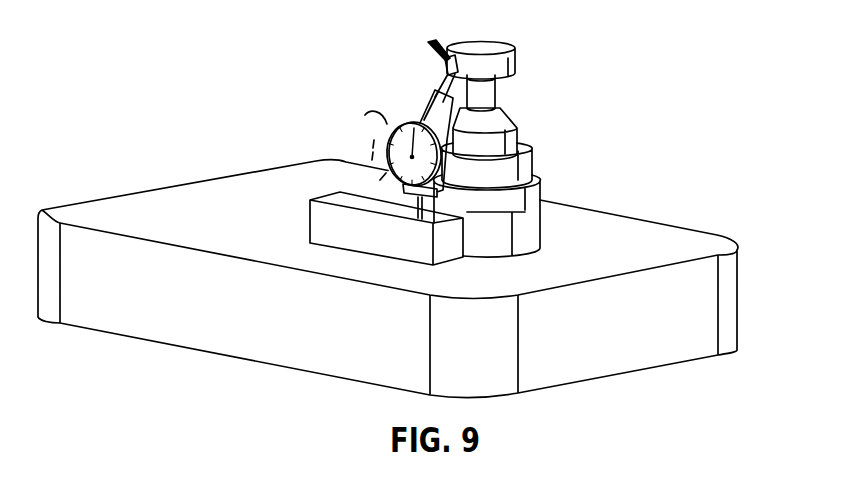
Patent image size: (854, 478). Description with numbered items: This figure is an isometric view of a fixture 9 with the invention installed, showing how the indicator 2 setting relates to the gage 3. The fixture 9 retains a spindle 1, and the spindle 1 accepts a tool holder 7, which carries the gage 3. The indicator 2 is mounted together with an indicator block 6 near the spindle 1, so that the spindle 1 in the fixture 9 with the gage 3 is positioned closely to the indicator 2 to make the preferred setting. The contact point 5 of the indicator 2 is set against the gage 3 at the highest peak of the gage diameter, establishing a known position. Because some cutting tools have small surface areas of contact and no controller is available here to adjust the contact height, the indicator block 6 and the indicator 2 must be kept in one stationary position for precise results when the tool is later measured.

The spindle 1 is at (540, 188).
The indicator 2 is at (388, 126).
The gage 3 is at (517, 63).
The contact point 5 is at (428, 43).
The indicator block 6 is at (320, 221).
The tool holder 7 is at (517, 132).
The fixture 9 is at (148, 215).